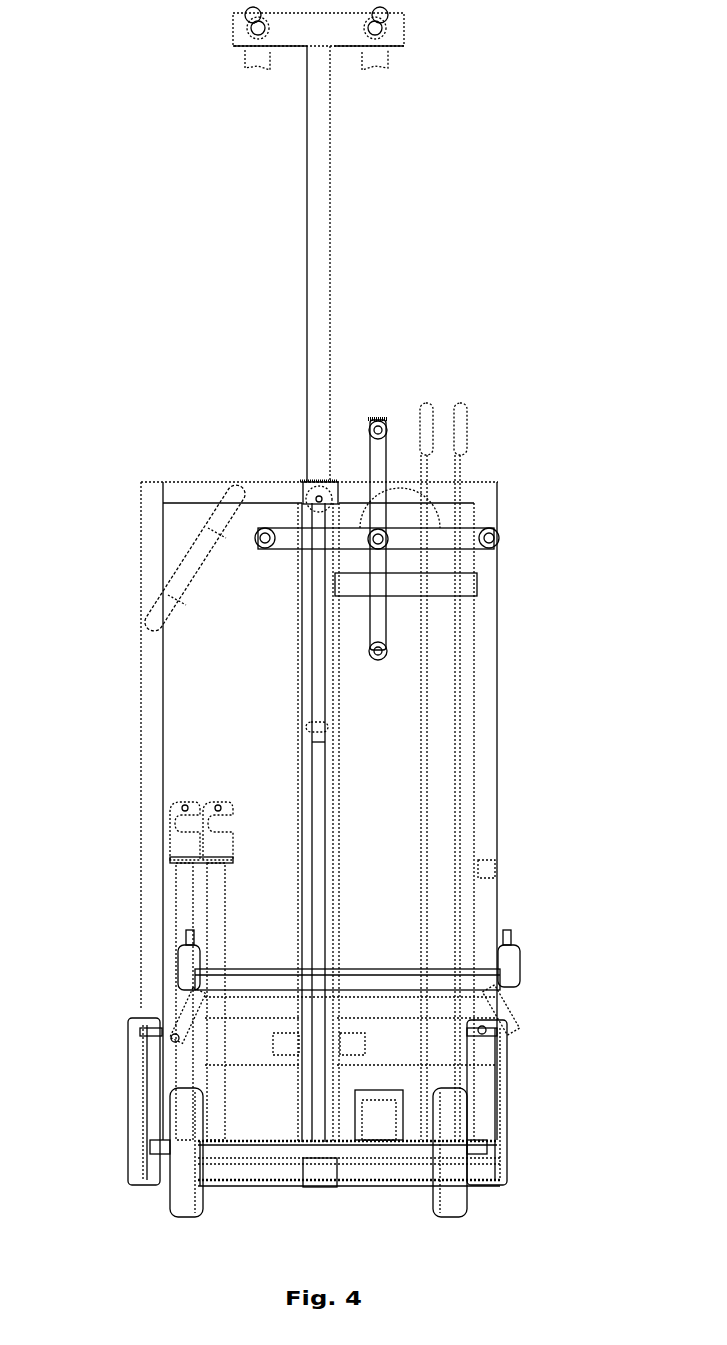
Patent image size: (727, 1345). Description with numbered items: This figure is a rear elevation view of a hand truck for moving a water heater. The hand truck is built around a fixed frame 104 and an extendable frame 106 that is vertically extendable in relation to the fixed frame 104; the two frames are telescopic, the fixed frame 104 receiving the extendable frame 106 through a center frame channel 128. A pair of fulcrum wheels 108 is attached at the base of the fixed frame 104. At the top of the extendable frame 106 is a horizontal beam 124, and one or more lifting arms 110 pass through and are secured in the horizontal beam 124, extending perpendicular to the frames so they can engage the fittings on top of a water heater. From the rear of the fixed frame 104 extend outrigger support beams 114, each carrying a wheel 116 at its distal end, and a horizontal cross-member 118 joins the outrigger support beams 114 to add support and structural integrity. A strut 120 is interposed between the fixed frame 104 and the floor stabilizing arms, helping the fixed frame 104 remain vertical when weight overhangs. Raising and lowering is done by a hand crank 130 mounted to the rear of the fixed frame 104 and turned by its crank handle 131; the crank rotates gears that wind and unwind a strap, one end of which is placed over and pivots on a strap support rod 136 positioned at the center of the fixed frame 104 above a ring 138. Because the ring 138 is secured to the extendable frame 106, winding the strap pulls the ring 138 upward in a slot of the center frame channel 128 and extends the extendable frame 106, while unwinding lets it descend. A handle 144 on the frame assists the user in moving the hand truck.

The fixed frame 104 is at (487, 620).
The extendable frame 106 is at (312, 283).
The fulcrum wheels 108 is at (185, 1192).
The lifting arms 110 is at (258, 27).
The outrigger support beam 114 is at (185, 1005).
The wheel 116 is at (185, 968).
The horizontal cross-member 118 is at (386, 975).
The strut 120 is at (132, 1112).
The horizontal beam 124 is at (297, 35).
The center frame channel 128 is at (306, 567).
The hand crank 130 is at (372, 463).
The crank handle 131 is at (385, 651).
The strap support rod 136 is at (310, 498).
The ring 138 is at (316, 727).
The handle 144 is at (178, 565).